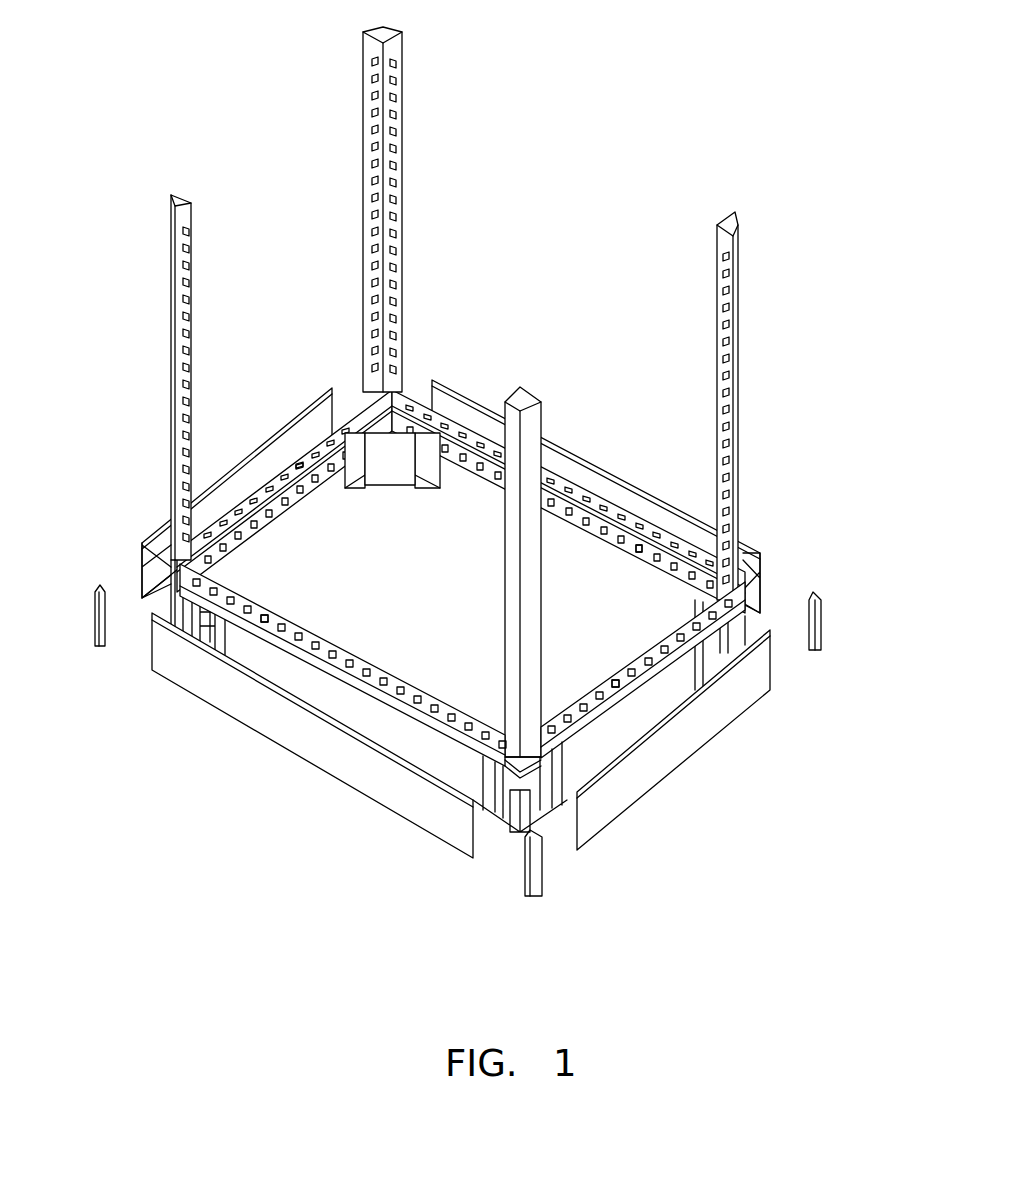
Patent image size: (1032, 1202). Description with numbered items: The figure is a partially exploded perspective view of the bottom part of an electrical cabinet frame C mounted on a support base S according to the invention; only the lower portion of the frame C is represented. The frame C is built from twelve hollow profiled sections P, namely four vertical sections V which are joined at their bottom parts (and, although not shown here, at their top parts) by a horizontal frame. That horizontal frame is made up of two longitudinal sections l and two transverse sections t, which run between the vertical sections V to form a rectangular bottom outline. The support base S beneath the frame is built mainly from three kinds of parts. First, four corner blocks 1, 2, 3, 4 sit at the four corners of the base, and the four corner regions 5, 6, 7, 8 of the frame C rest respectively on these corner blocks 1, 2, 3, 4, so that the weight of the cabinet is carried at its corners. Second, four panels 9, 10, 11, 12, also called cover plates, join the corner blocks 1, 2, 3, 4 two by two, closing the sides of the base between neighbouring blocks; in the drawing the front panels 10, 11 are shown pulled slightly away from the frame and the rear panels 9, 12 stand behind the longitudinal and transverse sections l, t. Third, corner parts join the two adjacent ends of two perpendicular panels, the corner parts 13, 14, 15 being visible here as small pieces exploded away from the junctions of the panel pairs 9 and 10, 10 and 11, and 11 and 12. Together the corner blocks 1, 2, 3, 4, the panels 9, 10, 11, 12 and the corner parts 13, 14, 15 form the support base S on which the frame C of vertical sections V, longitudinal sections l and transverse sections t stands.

The corner block 1 is at (166, 640).
The corner block 2 is at (400, 458).
The corner block 3 is at (728, 640).
The corner block 4 is at (541, 836).
The corner region 5 is at (148, 550).
The corner region 6 is at (435, 390).
The corner region 7 is at (733, 566).
The corner region 8 is at (505, 822).
The panel 9 is at (258, 470).
The panel 10 is at (366, 782).
The panel 11 is at (727, 703).
The panel 12 is at (583, 475).
The corner part 13 is at (97, 648).
The corner part 14 is at (536, 898).
The corner part 15 is at (830, 641).
The vertical section V is at (502, 392).
The hollow profiled section P is at (746, 251).
The electrical cabinet frame C is at (572, 182).
The support base S is at (247, 823).
The transverse section t is at (305, 396).
The longitudinal section l is at (640, 520).